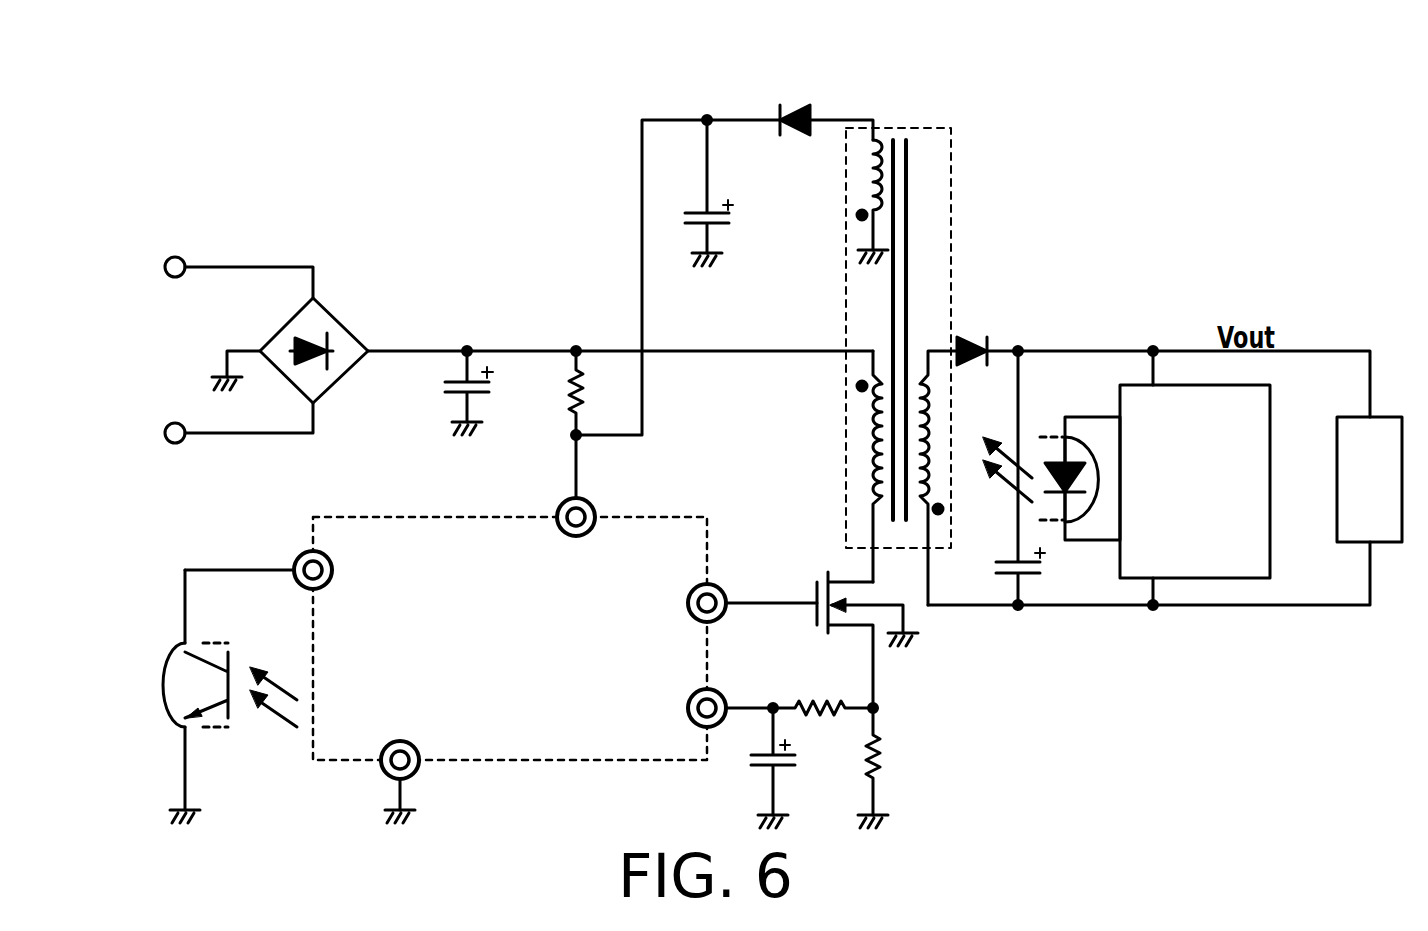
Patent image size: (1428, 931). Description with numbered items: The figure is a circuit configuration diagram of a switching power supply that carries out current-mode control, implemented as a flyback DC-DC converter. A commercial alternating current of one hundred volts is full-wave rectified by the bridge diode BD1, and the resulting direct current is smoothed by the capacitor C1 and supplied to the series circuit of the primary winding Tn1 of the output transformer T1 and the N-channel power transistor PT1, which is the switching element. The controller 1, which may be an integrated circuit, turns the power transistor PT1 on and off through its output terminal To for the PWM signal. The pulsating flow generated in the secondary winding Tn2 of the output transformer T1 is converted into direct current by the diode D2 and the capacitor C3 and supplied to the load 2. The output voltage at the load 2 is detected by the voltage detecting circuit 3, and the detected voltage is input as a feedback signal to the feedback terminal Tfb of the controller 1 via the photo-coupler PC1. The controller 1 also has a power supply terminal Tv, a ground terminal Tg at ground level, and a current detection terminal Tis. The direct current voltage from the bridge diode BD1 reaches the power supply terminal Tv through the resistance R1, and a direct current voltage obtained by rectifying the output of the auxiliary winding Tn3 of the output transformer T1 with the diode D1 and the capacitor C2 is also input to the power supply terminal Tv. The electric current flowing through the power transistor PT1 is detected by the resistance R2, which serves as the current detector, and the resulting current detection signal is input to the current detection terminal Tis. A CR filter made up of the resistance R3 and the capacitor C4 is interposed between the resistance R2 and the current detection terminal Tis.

The controller 1 is at (643, 517).
The load 2 is at (1335, 500).
The voltage detecting circuit 3 is at (1273, 440).
The bridge diode BD1 is at (342, 320).
The capacitor C1 is at (438, 392).
The capacitor C2 is at (735, 220).
The capacitor C3 is at (1000, 558).
The capacitor C4 is at (798, 772).
The resistance R1 is at (565, 400).
The resistance R2 is at (887, 753).
The resistance R3 is at (818, 692).
The diode D1 is at (808, 103).
The diode D2 is at (958, 335).
The output transformer T1 is at (892, 326).
The primary winding Tn1 is at (858, 428).
The secondary winding Tn2 is at (942, 413).
The auxiliary winding Tn3 is at (857, 173).
The power transistor PT1 is at (813, 567).
The photo-coupler PC1 is at (1085, 527).
The power supply terminal Tv is at (563, 498).
The feedback terminal Tfb is at (300, 593).
The ground terminal Tg is at (382, 773).
The output terminal To is at (724, 619).
The current detection terminal Tis is at (717, 733).